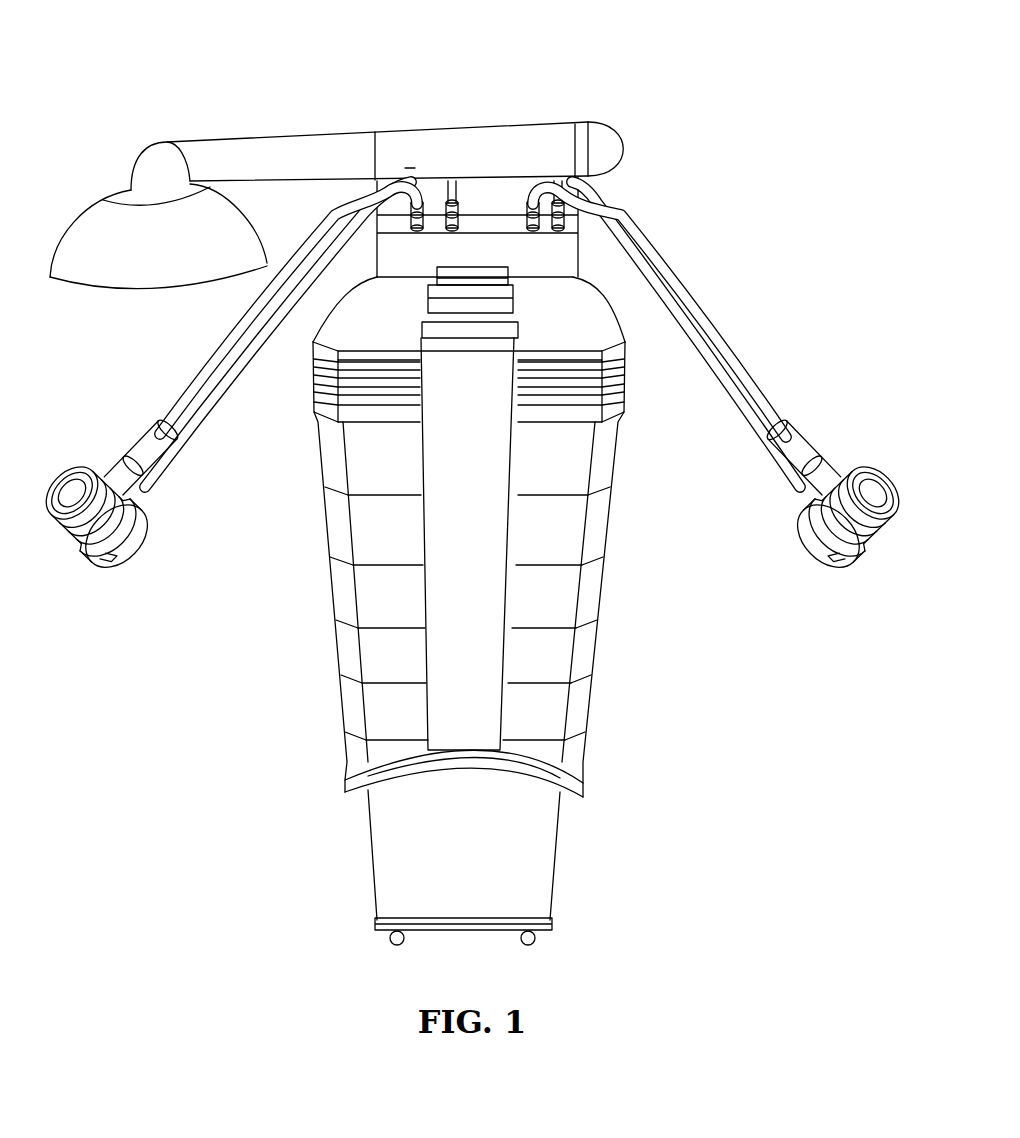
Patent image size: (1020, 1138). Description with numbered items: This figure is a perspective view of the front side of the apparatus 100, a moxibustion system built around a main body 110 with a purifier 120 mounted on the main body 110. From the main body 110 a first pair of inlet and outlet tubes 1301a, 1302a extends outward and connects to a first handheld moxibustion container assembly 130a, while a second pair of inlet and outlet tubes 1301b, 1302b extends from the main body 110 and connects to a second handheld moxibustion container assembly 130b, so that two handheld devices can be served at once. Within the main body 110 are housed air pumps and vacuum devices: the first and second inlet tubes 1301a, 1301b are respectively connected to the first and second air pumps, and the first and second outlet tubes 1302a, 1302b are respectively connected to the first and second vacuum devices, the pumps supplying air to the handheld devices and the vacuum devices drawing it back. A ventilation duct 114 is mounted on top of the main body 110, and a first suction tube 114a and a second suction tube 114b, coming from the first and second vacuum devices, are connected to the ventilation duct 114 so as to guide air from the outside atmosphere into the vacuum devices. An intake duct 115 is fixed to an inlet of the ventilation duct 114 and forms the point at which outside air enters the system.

The apparatus 100 is at (306, 58).
The main body 110 is at (553, 875).
The ventilation duct 114 is at (460, 145).
The first suction tube 114a is at (448, 192).
The second suction tube 114b is at (590, 176).
The intake duct 115 is at (147, 280).
The purifier 120 is at (595, 657).
The first handheld moxibustion container assembly 130a is at (120, 553).
The second handheld moxibustion container assembly 130b is at (837, 553).
The first inlet tube 1301a is at (197, 377).
The first outlet tube 1302a is at (227, 390).
The second inlet tube 1301b is at (762, 393).
The second outlet tube 1302b is at (745, 420).